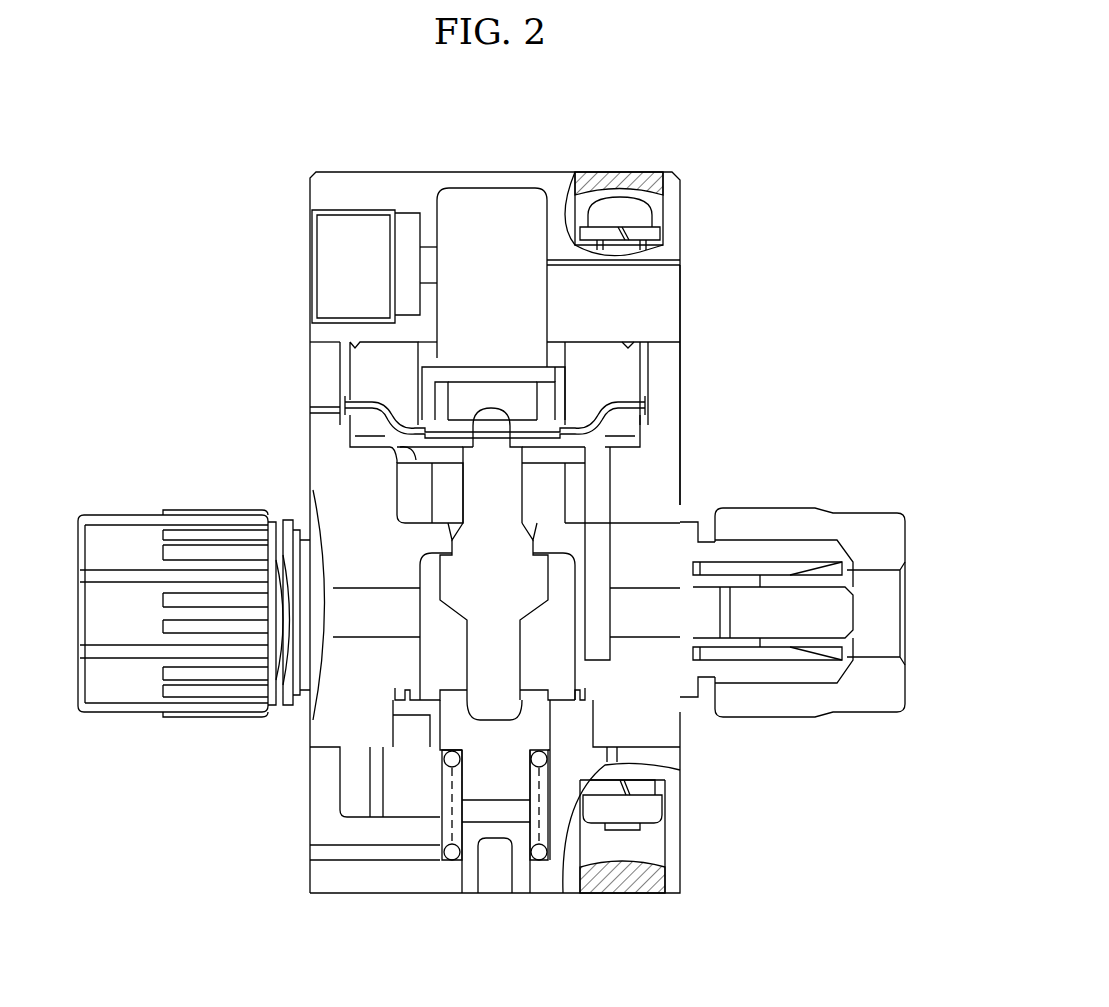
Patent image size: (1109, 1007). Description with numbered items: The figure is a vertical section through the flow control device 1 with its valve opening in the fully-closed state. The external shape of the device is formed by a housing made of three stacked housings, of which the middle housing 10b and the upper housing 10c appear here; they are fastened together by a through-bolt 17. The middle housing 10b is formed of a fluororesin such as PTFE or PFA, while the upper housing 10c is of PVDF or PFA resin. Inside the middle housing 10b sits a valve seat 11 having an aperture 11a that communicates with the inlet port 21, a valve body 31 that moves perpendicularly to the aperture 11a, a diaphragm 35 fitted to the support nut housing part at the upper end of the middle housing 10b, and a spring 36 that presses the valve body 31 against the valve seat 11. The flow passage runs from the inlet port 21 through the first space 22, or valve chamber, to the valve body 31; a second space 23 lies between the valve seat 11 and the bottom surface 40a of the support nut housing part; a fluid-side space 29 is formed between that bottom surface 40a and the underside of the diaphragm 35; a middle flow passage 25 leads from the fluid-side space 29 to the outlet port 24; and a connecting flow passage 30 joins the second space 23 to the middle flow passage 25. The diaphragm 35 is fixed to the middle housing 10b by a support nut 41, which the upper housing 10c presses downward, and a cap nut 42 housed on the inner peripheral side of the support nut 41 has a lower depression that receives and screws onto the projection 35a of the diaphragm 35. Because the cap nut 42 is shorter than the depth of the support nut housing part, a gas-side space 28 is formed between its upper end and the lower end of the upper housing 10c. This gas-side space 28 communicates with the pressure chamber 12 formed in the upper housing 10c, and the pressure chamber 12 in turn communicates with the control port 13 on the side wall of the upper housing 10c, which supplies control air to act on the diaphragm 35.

The flow control device 1 is at (801, 128).
The middle housing 10b is at (681, 432).
The upper housing 10c is at (681, 300).
The valve seat 11 is at (322, 452).
The aperture 11a is at (445, 545).
The pressure chamber 12 is at (479, 270).
The control port 13 is at (330, 265).
The through-bolt 17 is at (642, 217).
The inlet port 21 is at (365, 625).
The first space 22 is at (432, 664).
The second space 23 is at (442, 497).
The outlet port 24 is at (648, 627).
The middle flow passage 25 is at (603, 498).
The gas-side space 28 is at (490, 375).
The fluid-side space 29 is at (538, 453).
The connecting flow passage 30 is at (568, 520).
The valve body 31 is at (530, 605).
The diaphragm 35 is at (632, 430).
The projection 35a is at (468, 395).
The spring 36 is at (450, 862).
The bottom surface of the support nut housing part 40a is at (400, 458).
The support nut 41 is at (618, 360).
The cap nut 42 is at (542, 378).